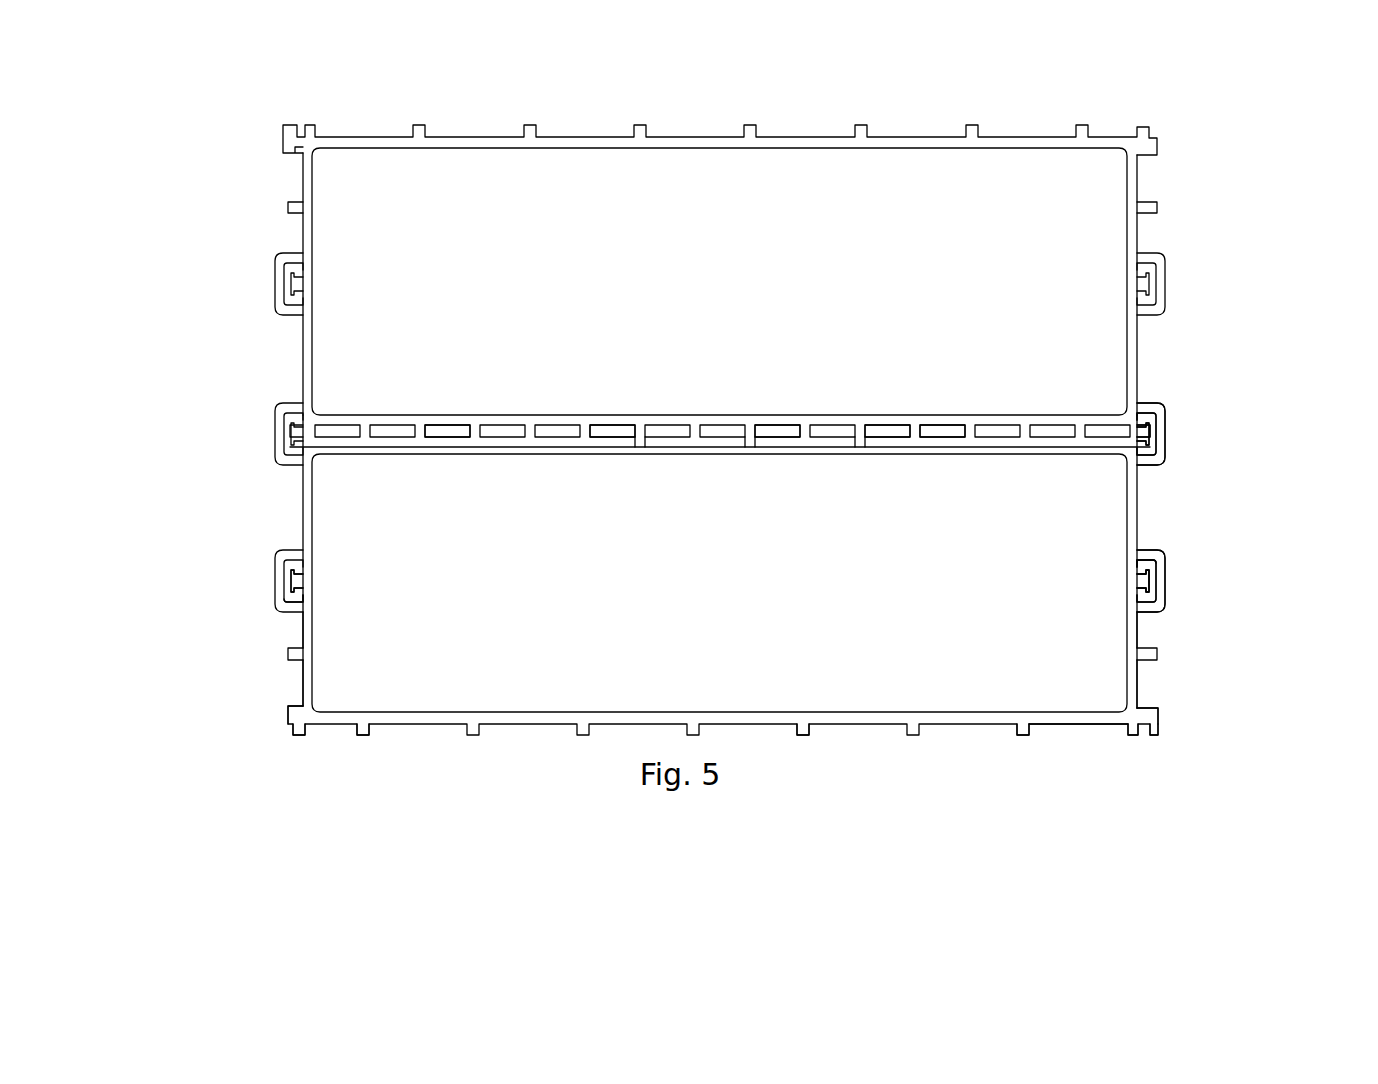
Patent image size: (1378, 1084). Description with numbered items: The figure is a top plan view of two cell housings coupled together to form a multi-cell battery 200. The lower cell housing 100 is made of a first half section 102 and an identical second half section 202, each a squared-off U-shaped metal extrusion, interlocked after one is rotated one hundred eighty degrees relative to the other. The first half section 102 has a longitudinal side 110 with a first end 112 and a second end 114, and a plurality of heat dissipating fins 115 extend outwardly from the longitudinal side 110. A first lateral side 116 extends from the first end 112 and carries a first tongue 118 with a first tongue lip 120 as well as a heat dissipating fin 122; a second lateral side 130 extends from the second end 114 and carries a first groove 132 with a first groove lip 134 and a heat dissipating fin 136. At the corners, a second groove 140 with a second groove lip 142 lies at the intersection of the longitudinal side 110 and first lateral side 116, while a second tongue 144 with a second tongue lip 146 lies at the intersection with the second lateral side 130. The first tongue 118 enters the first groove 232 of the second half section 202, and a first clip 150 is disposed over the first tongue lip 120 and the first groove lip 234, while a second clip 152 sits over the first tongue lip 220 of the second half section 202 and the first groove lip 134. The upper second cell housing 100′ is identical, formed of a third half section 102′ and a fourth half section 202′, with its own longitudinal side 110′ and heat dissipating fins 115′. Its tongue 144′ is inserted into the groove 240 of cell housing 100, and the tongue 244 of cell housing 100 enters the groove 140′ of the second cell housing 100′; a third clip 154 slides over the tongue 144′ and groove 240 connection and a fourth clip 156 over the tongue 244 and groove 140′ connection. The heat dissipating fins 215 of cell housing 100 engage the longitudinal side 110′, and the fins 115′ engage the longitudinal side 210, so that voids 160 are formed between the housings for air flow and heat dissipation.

The cell housing 100 is at (1140, 522).
The second cell housing 100′ is at (1140, 188).
The first half section 102 is at (1096, 727).
The third half section 102′ is at (1142, 322).
The longitudinal side 110 is at (553, 726).
The longitudinal side 110′ is at (880, 427).
The first end 112 is at (1157, 732).
The second end 114 is at (300, 695).
The heat dissipating fins 115 is at (364, 736).
The heat dissipating fins 115′ is at (605, 427).
The first lateral side 116 is at (1160, 640).
The first tongue 118 is at (1140, 588).
The first tongue lip 120 is at (1145, 625).
The heat dissipating fin 122 is at (1152, 655).
The second lateral side 130 is at (300, 640).
The first groove 132 is at (303, 580).
The first groove lip 134 is at (303, 600).
The heat dissipating fin 136 is at (295, 655).
The second groove 140 is at (1134, 737).
The groove 140′ is at (1160, 405).
The second groove lip 142 is at (1155, 700).
The second tongue 144 is at (300, 736).
The tongue 144′ is at (300, 402).
The second tongue lip 146 is at (290, 705).
The first clip 150 is at (1168, 588).
The second clip 152 is at (278, 575).
The third clip 154 is at (285, 430).
The fourth clip 156 is at (1165, 452).
The voids 160 is at (446, 427).
The multi-cell battery 200 is at (1181, 117).
The second half section 202 is at (510, 446).
The fourth half section 202′ is at (705, 135).
The longitudinal side 210 is at (655, 456).
The heat dissipating fins 215 is at (728, 438).
The first tongue lip 220 is at (300, 560).
The first groove 232 is at (1142, 580).
The first groove lip 234 is at (1165, 555).
The groove 240 is at (288, 436).
The tongue 244 is at (1165, 426).